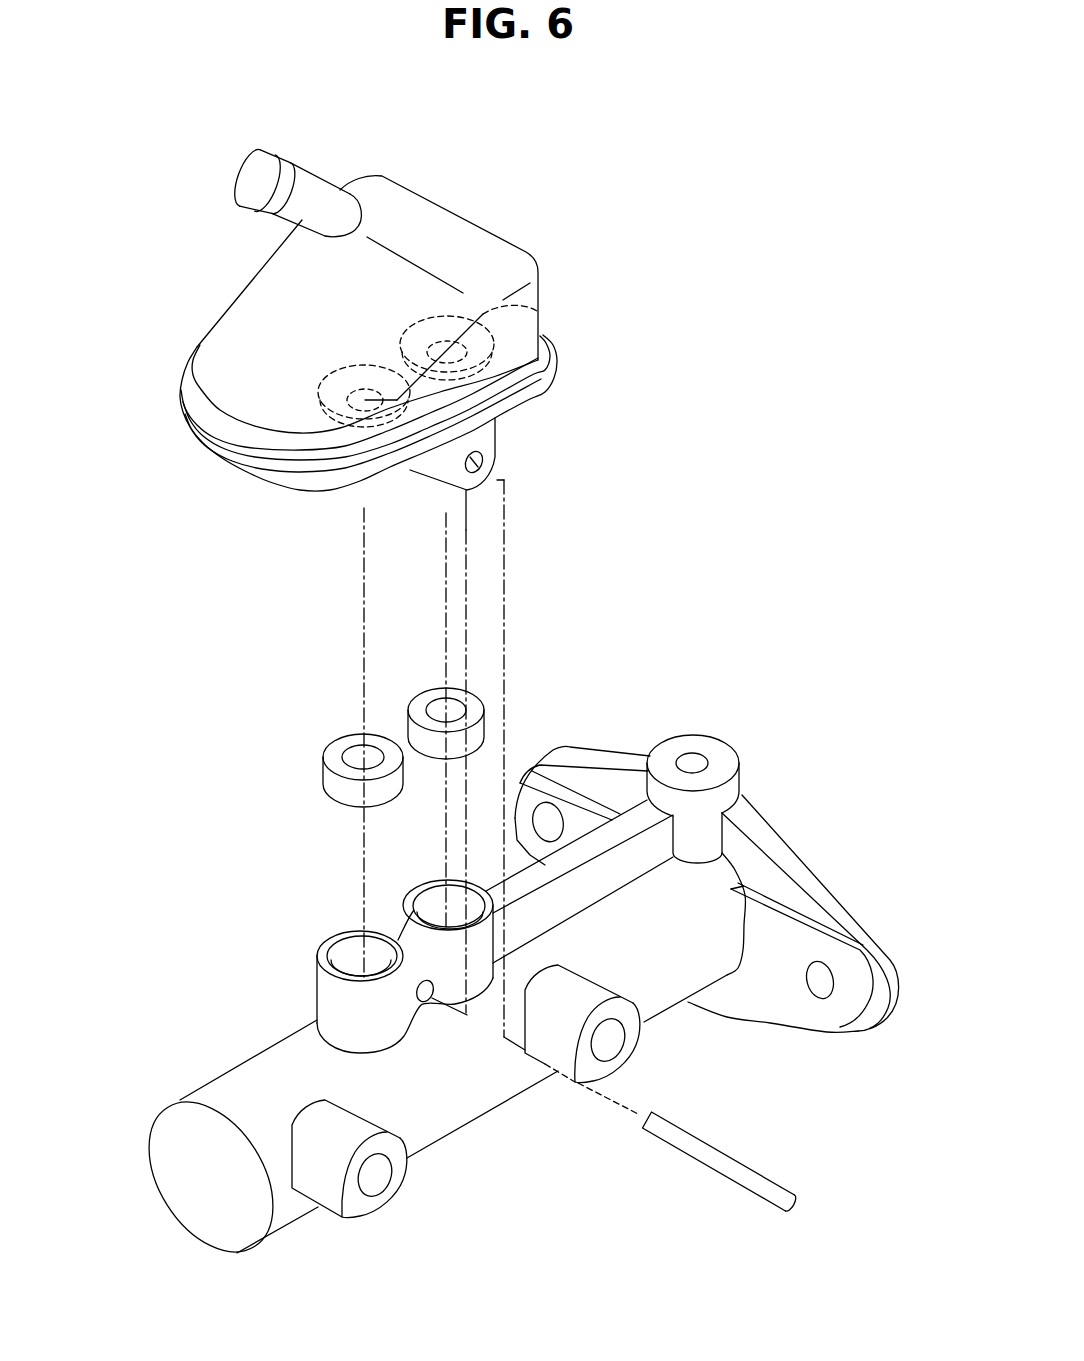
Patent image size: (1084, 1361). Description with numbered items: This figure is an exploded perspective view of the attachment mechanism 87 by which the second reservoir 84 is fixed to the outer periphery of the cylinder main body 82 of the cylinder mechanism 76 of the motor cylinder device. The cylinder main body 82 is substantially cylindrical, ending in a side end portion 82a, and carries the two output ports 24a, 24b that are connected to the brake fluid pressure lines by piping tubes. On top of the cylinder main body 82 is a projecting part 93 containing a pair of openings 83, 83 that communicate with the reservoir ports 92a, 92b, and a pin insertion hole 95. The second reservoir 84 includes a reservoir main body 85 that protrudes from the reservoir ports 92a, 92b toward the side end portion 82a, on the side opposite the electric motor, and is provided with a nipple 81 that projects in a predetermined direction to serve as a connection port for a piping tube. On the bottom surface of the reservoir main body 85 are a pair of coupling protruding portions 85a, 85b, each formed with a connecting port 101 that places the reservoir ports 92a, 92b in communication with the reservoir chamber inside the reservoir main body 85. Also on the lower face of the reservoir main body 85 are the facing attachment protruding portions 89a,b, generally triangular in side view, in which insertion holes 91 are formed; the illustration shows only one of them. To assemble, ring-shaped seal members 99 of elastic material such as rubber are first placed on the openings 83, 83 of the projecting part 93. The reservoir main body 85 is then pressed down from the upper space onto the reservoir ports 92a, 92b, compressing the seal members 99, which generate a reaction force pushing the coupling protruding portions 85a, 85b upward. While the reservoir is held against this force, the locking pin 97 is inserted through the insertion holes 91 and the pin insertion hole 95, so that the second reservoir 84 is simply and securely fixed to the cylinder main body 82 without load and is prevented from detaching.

The nipple 81 is at (306, 186).
The second reservoir 84 is at (486, 210).
The reservoir main body 85 is at (238, 308).
The coupling protruding portion 85a is at (483, 317).
The coupling protruding portion 85b is at (318, 395).
The connecting port 101 is at (556, 378).
The attachment protruding portions 89a,b is at (478, 462).
The insertion hole 91 is at (485, 440).
The attachment mechanism 87 is at (533, 608).
The seal member 99 is at (333, 753).
The opening 83 is at (437, 896).
The reservoir port 92a is at (433, 898).
The reservoir port 92b is at (343, 948).
The projecting part 93 is at (330, 990).
The pin insertion hole 95 is at (427, 1003).
The output port 24a is at (613, 1036).
The output port 24b is at (365, 1182).
The cylinder main body 82 is at (507, 1073).
The side end portion 82a is at (203, 1200).
The cylinder mechanism 76 is at (476, 1140).
The locking pin 97 is at (745, 1172).